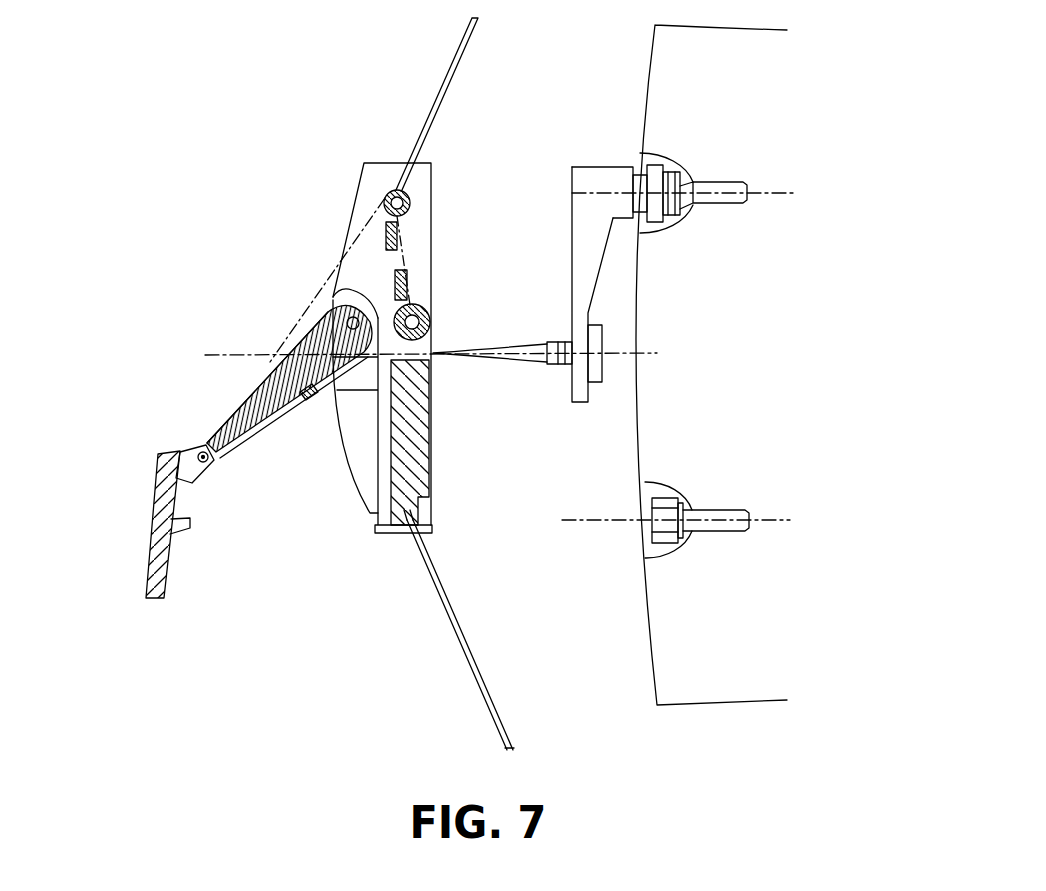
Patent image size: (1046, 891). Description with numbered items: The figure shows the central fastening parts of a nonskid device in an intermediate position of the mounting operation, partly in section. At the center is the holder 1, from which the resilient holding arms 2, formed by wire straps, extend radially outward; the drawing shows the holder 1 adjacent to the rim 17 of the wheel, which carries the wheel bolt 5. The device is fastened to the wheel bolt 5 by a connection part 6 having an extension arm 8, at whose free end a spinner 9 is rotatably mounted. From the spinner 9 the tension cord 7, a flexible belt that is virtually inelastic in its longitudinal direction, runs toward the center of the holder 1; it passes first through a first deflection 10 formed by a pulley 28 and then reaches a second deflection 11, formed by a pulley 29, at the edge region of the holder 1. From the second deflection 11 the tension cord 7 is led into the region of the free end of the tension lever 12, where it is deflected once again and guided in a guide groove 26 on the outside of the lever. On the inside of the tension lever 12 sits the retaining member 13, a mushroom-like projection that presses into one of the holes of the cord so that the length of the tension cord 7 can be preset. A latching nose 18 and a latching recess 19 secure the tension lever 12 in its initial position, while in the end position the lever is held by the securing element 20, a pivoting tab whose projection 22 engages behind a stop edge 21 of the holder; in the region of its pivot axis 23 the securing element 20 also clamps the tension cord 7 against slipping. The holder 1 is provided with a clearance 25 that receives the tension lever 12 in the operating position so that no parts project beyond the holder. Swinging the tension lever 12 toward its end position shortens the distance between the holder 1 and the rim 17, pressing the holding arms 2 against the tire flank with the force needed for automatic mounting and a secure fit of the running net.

The holder 1 is at (356, 180).
The holding arms 2 is at (449, 68).
The wheel bolt 5 is at (693, 178).
The connection part 6 is at (570, 192).
The tension cord 7 is at (307, 308).
The extension arm 8 is at (590, 252).
The spinner 9 is at (567, 365).
The first deflection 10 is at (410, 292).
The second deflection 11 is at (410, 203).
The tension lever 12 is at (262, 437).
The retaining member 13 is at (311, 396).
The rim 17 is at (658, 440).
The latching nose 18 is at (330, 313).
The latching recess 19 is at (333, 297).
The securing element 20 is at (143, 563).
The stop edge 21 is at (420, 543).
The projection 22 is at (180, 530).
The pivot axis 23 is at (192, 452).
The clearance 25 is at (357, 443).
The guide groove 26 is at (262, 368).
The pulley 28 is at (430, 321).
The pulley 29 is at (432, 172).